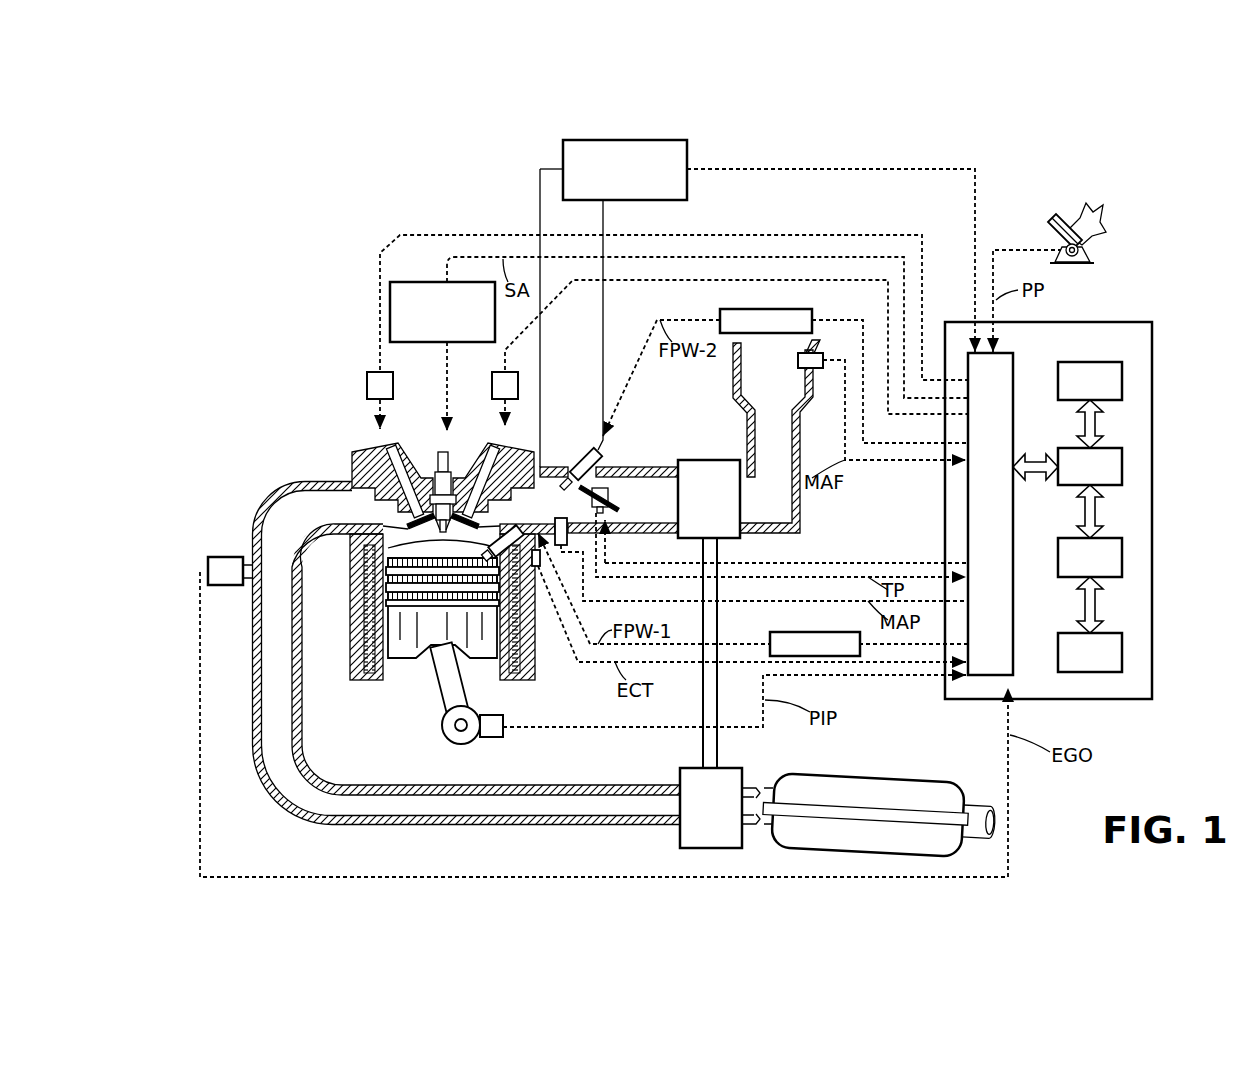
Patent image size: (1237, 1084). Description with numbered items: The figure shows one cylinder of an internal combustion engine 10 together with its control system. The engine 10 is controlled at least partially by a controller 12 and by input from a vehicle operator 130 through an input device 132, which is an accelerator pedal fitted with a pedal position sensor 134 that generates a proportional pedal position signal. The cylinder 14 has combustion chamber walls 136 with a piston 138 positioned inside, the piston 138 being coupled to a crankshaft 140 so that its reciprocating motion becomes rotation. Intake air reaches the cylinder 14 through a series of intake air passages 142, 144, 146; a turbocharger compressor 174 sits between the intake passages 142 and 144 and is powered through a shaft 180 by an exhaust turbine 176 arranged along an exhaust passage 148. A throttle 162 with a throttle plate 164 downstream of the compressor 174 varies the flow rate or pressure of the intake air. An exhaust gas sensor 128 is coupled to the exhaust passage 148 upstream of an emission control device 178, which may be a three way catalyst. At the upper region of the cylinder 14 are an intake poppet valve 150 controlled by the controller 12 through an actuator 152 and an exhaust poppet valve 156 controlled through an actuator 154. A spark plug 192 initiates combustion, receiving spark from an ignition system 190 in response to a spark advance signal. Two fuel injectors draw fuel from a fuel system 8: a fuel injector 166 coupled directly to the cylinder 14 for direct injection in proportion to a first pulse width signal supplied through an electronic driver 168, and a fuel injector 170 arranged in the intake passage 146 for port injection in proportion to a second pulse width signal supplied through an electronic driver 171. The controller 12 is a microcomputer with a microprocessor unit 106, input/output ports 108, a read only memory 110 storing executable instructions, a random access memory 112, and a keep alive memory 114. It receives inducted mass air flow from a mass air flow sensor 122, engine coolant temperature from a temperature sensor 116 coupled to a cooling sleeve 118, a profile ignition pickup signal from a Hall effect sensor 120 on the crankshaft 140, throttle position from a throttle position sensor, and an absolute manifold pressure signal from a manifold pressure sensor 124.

The fuel system 8 is at (662, 140).
The internal combustion engine 10 is at (282, 402).
The controller 12 is at (1152, 326).
The cylinder 14 is at (364, 556).
The microprocessor unit 106 is at (1122, 462).
The input/output ports 108 is at (1013, 362).
The read only memory 110 is at (1122, 378).
The random access memory 112 is at (1122, 553).
The keep alive memory 114 is at (1122, 648).
The temperature sensor 116 is at (541, 568).
The cooling sleeve 118 is at (536, 612).
The Hall effect sensor 120 is at (492, 738).
The mass air flow sensor 122 is at (820, 341).
The manifold pressure sensor 124 is at (568, 545).
The exhaust gas sensor 128 is at (210, 560).
The vehicle operator 130 is at (1097, 212).
The input device 132 is at (1050, 230).
The pedal position sensor 134 is at (1080, 255).
The combustion chamber walls 136 is at (383, 675).
The piston 138 is at (430, 632).
The crankshaft 140 is at (450, 738).
The intake air passage 142 is at (758, 391).
The intake air passage 144 is at (636, 511).
The intake air passage 146 is at (542, 511).
The exhaust passage 148 is at (312, 518).
The intake poppet valve 150 is at (452, 492).
The actuator 152 is at (492, 388).
The actuator 154 is at (366, 382).
The exhaust poppet valve 156 is at (357, 484).
The throttle 162 is at (602, 487).
The throttle plate 164 is at (570, 478).
The fuel injector 166 is at (505, 532).
The electronic driver 168 is at (770, 634).
The fuel injector 170 is at (586, 462).
The electronic driver 171 is at (722, 318).
The compressor 174 is at (712, 460).
The exhaust turbine 176 is at (680, 835).
The emission control device 178 is at (928, 790).
The shaft 180 is at (717, 735).
The ignition system 190 is at (406, 283).
The spark plug 192 is at (443, 452).